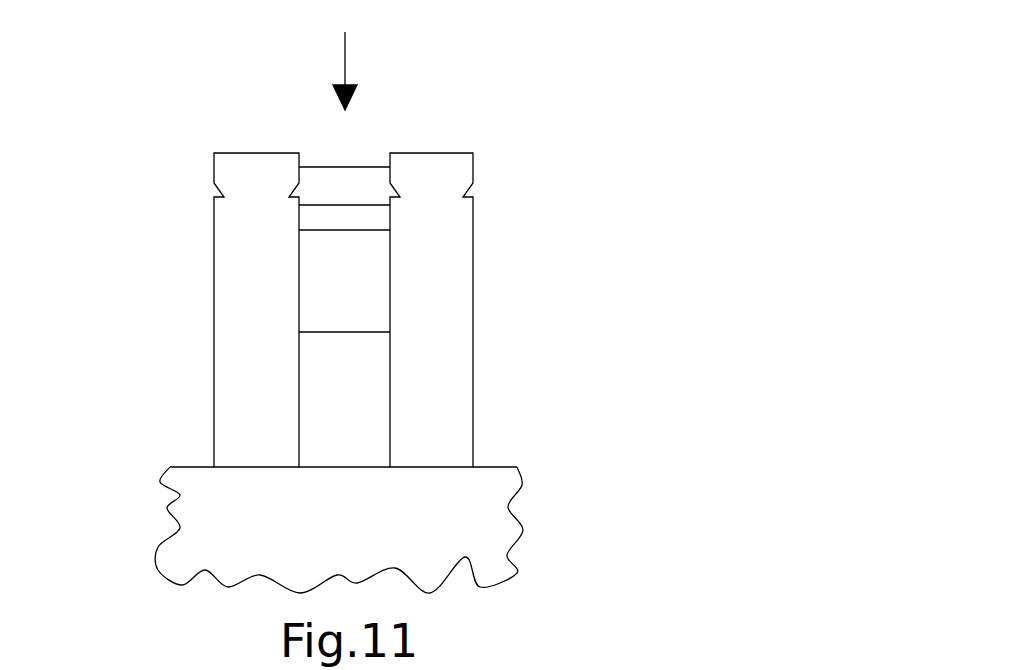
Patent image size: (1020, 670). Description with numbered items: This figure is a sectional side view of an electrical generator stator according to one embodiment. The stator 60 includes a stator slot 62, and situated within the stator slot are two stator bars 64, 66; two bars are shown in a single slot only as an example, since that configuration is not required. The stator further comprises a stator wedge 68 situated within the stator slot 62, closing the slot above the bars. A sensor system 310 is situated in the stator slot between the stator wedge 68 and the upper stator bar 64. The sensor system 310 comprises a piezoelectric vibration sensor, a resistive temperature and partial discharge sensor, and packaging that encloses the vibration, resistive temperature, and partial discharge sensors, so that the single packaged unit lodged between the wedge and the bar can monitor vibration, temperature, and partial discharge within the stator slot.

The stator 60 is at (368, 517).
The stator slot 62 is at (347, 57).
The stator bar 64 is at (330, 293).
The stator bar 66 is at (326, 393).
The stator wedge 68 is at (380, 185).
The sensor system 310 is at (350, 218).